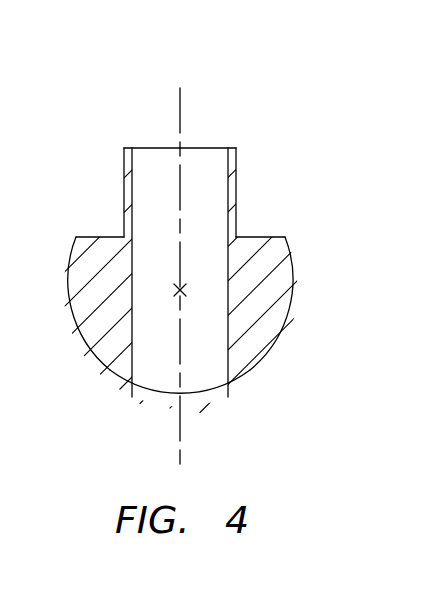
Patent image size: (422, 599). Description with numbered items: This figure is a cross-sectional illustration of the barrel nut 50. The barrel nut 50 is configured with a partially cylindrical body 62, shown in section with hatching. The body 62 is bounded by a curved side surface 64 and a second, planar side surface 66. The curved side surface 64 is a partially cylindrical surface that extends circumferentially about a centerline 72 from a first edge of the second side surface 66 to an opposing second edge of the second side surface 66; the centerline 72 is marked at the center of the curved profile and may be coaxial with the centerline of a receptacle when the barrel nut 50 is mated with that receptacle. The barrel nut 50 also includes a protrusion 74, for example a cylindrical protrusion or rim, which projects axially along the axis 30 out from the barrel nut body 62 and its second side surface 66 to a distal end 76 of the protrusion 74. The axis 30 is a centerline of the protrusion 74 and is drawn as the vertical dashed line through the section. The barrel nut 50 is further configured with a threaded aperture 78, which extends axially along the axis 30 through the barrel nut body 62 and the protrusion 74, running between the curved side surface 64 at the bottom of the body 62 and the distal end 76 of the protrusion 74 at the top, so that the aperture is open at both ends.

The barrel nut 50 is at (304, 101).
The body 62 is at (301, 307).
The curved side surface 64 is at (264, 372).
The second side surface 66 is at (259, 237).
The protrusion 74 is at (241, 186).
The distal end 76 is at (232, 147).
The threaded aperture 78 is at (153, 172).
The centerline 72 is at (176, 289).
The axis 30 is at (182, 455).